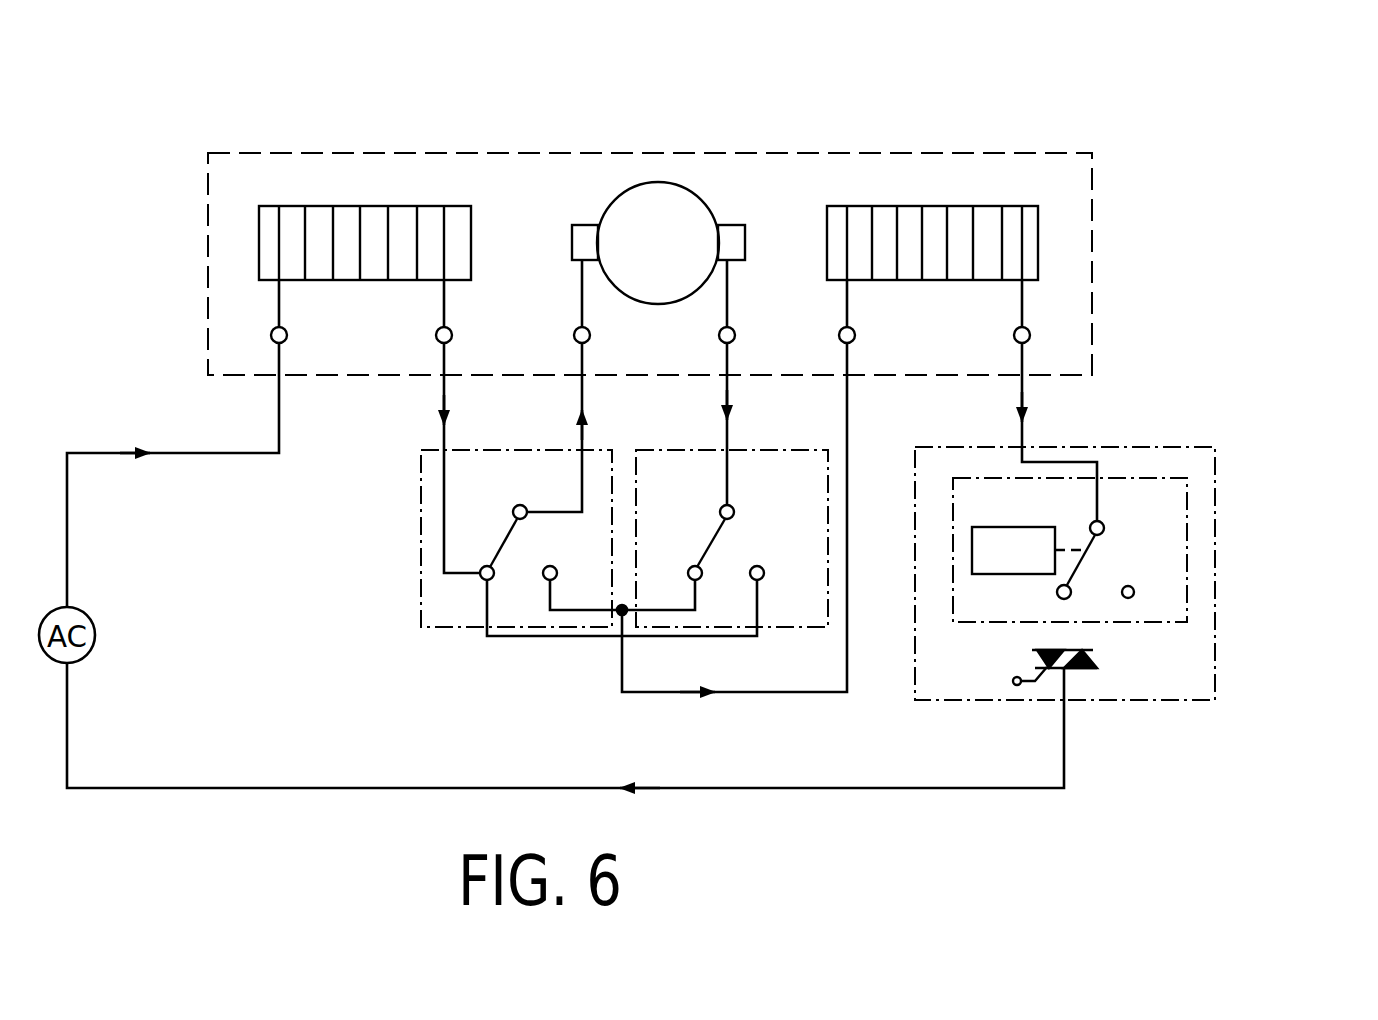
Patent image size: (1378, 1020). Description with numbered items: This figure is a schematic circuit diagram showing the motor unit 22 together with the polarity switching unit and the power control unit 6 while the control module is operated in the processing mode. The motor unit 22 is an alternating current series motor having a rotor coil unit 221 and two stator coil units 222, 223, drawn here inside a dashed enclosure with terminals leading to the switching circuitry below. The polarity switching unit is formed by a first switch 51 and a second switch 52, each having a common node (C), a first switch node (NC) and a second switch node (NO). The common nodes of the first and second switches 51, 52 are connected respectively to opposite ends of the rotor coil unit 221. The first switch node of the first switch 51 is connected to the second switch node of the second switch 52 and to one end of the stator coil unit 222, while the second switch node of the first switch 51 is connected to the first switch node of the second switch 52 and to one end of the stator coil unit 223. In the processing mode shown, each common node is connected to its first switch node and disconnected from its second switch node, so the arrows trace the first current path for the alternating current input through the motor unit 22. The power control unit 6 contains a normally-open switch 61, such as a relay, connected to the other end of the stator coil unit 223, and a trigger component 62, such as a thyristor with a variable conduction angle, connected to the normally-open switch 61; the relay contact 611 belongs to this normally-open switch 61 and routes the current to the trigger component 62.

The motor unit 22 is at (505, 153).
The rotor coil unit 221 is at (660, 182).
The stator coil unit 222 is at (315, 206).
The stator coil unit 223 is at (860, 206).
The first switch 51 is at (421, 530).
The second switch 52 is at (755, 450).
The power control unit 6 is at (1183, 447).
The normally-open switch 61 is at (1187, 498).
The relay contact 611 is at (1087, 568).
The trigger component 62 is at (1097, 658).